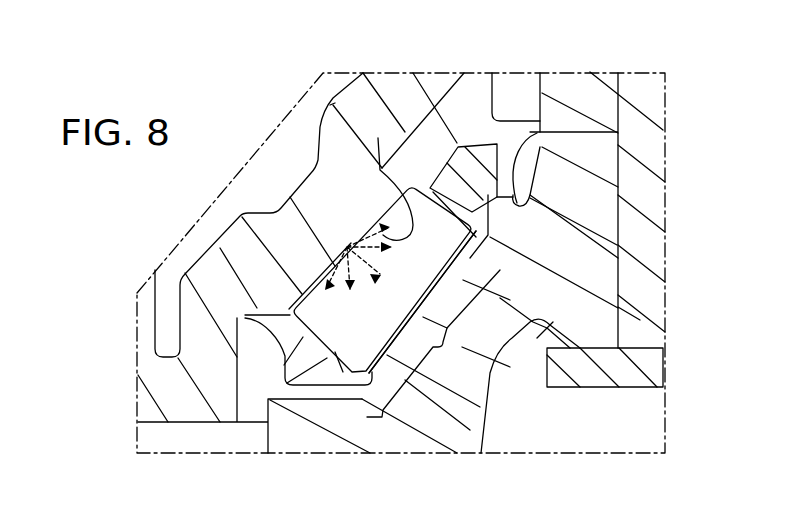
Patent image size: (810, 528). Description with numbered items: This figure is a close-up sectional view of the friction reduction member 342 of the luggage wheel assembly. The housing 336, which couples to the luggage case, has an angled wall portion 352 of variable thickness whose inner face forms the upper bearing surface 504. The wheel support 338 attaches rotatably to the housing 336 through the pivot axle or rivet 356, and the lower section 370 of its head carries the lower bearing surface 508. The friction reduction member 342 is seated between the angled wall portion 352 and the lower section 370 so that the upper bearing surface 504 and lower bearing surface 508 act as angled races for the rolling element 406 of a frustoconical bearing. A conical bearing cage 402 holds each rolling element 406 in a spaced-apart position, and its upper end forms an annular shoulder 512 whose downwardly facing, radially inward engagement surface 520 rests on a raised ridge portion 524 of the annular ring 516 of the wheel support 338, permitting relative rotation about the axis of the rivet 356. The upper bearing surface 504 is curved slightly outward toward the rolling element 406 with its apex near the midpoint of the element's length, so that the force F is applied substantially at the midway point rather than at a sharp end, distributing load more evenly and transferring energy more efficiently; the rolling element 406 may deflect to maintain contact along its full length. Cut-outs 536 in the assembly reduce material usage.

The housing 336 is at (223, 227).
The friction reduction member 342 is at (490, 373).
The wheel support 338 is at (470, 430).
The angled wall portion 352 is at (357, 97).
The pivot axle or rivet 356 is at (665, 352).
The lower section of the wheel support head 370 is at (603, 280).
The bearing cage 402 is at (245, 318).
The rolling element 406 is at (343, 360).
The upper bearing surface 504 is at (343, 240).
The lower bearing surface 508 is at (443, 290).
The annular shoulder 512 is at (618, 132).
The annular ring 516 is at (590, 212).
The engagement surface 520 is at (490, 225).
The ridge portion 524 is at (490, 255).
The cut-outs 536 is at (640, 348).
The force F is at (369, 199).